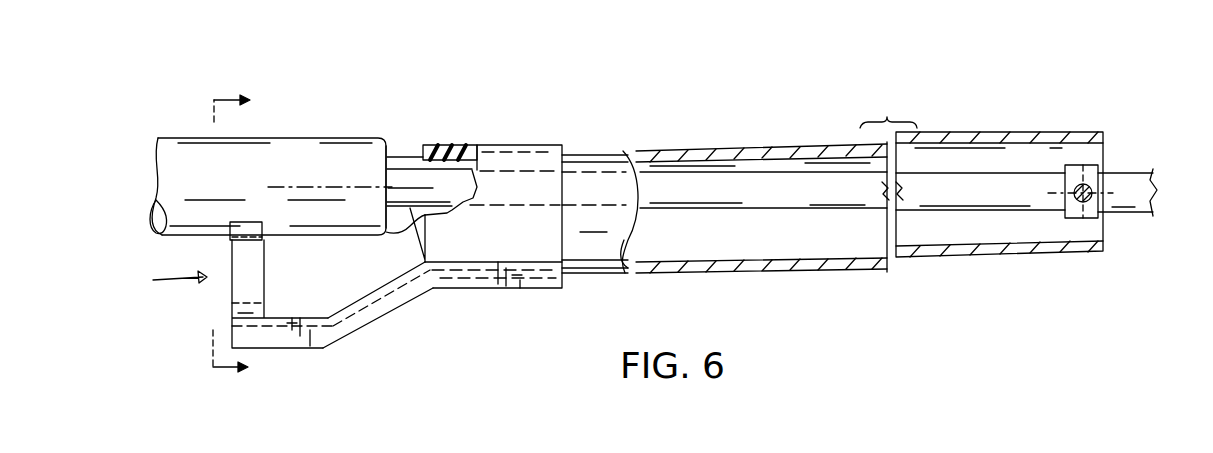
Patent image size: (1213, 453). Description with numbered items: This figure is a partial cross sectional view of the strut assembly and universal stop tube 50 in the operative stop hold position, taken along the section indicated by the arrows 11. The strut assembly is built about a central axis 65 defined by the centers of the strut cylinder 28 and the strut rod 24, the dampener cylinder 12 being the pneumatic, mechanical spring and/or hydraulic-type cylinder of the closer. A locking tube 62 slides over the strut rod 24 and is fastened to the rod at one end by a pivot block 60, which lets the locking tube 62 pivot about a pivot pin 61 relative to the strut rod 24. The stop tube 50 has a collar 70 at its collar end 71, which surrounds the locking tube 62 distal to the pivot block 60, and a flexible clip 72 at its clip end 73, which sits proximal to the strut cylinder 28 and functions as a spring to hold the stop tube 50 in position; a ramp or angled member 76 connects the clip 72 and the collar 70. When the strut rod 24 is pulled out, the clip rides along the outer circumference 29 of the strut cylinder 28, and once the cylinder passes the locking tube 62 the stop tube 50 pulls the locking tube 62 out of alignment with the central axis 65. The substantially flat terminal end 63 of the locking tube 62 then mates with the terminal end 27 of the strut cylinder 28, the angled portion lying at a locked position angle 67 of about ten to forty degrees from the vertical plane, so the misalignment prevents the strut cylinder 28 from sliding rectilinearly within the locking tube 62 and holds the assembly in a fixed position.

The section line 11- 11 is at (233, 237).
The dampener cylinder 12 is at (794, 114).
The strut rod 24 is at (1127, 188).
The terminal end of the strut cylinder 27 is at (388, 150).
The strut cylinder 28 is at (304, 160).
The outer circumference of the strut cylinder 29 is at (350, 176).
The stop tube 50 is at (526, 128).
The pivot block 60 is at (1075, 212).
The pivot pin 61 is at (1083, 181).
The locking tube 62 is at (590, 195).
The terminal end of the locking tube 63 is at (415, 228).
The central axis 65 is at (273, 185).
The locked position angle 67 is at (386, 233).
The collar 70 is at (505, 240).
The collar end 71 is at (583, 293).
The flexible clip 72 is at (243, 278).
The clip end 73 is at (164, 296).
The angled member 76 is at (380, 296).